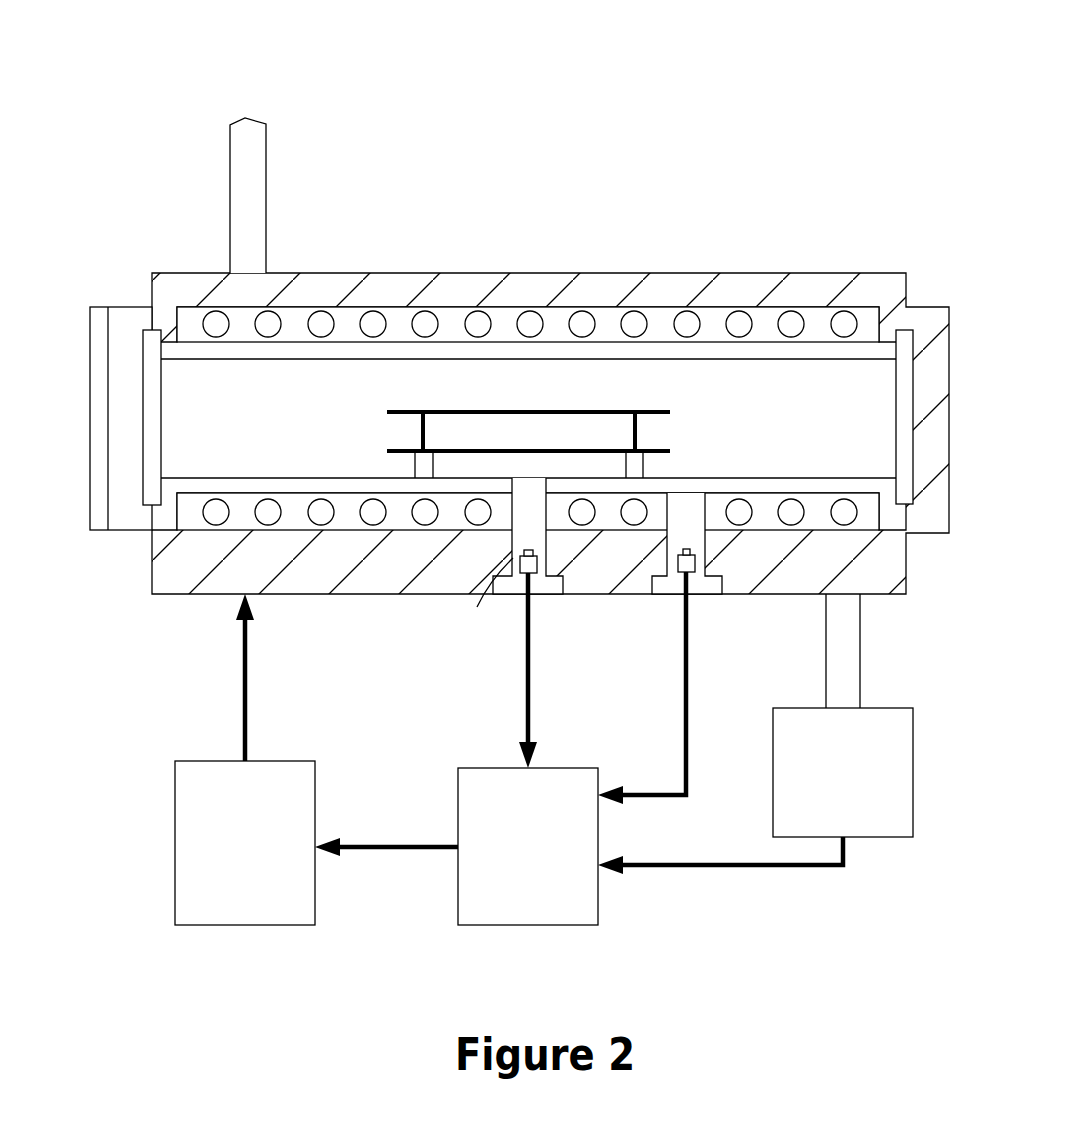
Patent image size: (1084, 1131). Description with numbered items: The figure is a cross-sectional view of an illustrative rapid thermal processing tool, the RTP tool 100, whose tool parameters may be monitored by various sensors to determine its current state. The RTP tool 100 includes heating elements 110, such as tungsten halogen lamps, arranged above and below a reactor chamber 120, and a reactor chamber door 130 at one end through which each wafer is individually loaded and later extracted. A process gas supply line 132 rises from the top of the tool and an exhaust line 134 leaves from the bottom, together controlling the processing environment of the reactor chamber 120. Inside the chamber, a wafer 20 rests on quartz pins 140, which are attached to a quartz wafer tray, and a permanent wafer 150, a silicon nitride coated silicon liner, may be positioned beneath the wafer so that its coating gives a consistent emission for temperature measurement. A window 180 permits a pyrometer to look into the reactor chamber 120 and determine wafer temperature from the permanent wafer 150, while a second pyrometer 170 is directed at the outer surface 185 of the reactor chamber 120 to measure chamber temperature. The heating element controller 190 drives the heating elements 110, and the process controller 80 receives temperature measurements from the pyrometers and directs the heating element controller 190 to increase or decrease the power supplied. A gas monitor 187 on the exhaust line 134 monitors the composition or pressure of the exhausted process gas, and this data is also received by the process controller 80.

The RTP tool 100 is at (170, 66).
The heating elements 110 is at (490, 316).
The reactor chamber 120 is at (268, 380).
The reactor chamber door 130 is at (98, 305).
The process gas supply line 132 is at (266, 172).
The exhaust line 134 is at (827, 678).
The quartz pins 140 is at (640, 435).
The permanent wafer 150 is at (400, 452).
The second pyrometer 170 is at (672, 556).
The window 180 is at (532, 480).
The outer surface 185 is at (710, 495).
The gas monitor 187 is at (821, 818).
The heating element controller 190 is at (222, 906).
The process controller 80 is at (513, 894).
The substrate / wafer 20 is at (580, 410).